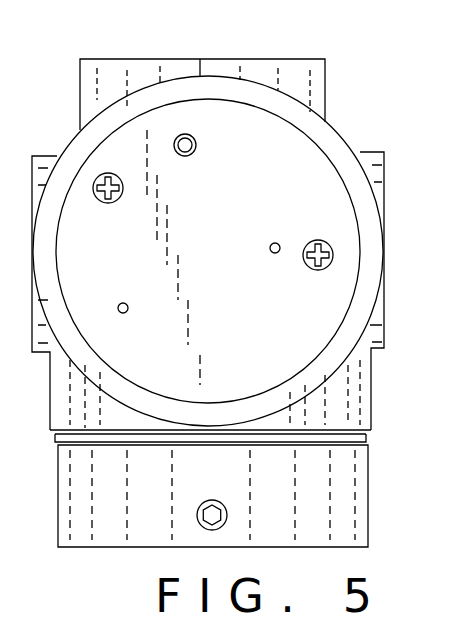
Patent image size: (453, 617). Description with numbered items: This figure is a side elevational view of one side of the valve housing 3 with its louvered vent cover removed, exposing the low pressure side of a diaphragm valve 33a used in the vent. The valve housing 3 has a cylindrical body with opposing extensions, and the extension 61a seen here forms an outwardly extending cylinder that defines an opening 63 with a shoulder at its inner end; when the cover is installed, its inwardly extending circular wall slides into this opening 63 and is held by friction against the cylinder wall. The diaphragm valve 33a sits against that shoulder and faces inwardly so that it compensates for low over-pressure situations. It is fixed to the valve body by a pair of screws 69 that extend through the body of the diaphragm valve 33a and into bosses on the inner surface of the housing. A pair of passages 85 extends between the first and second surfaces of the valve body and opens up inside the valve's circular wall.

The valve housing 3 is at (343, 78).
The extension 61a is at (338, 133).
The opening 63 is at (285, 347).
The screw 69 is at (120, 198).
The passage 85 is at (274, 243).
The diaphragm valve 33a is at (310, 302).